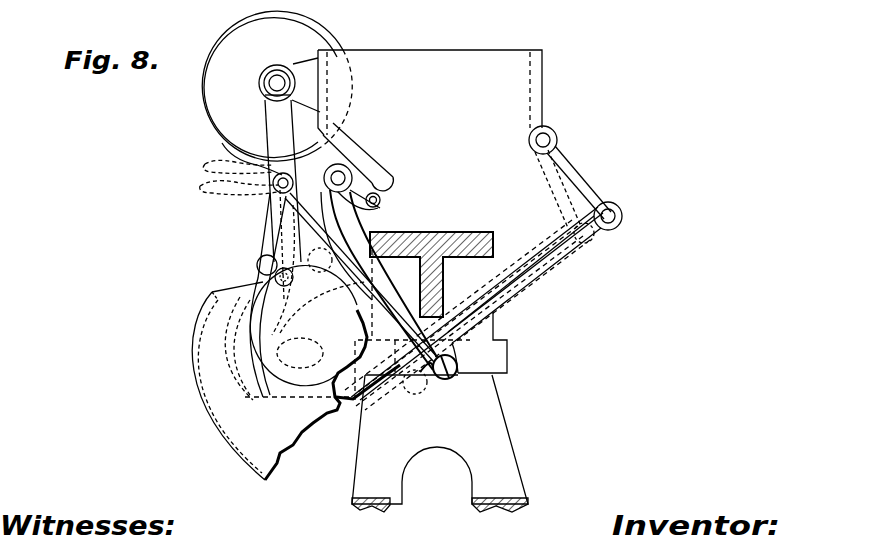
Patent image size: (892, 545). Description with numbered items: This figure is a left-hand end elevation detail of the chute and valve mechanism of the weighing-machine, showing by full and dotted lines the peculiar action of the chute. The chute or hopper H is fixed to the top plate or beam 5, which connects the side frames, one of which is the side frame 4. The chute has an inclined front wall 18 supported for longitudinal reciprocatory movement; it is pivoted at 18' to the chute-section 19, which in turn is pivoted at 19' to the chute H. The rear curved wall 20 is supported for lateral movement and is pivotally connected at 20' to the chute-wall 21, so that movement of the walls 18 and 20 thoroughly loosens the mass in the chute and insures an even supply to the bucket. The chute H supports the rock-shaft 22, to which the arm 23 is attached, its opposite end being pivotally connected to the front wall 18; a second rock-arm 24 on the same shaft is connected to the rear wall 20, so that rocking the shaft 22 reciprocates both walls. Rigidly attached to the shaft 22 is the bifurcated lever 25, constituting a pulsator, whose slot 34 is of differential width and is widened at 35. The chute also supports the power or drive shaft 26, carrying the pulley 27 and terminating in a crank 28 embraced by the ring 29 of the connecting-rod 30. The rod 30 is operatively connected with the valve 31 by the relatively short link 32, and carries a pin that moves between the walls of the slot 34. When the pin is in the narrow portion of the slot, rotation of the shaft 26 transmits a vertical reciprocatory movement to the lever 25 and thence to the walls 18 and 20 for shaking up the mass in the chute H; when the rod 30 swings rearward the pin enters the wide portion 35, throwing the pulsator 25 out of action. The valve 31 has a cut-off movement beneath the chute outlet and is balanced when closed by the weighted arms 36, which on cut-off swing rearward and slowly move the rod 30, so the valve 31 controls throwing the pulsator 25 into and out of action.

The chute H is at (430, 92).
The side frame 4 is at (440, 412).
The plate or beam 5 is at (460, 234).
The front wall 18 is at (474, 308).
The pivot 18' is at (626, 213).
The chute-section 19 is at (573, 194).
The pivot 19' is at (559, 134).
The rear curved wall 20 is at (235, 348).
The pivotal connection 20' is at (390, 185).
The chute-wall 21 is at (352, 171).
The rock-shaft 22 is at (340, 166).
The arm 23 is at (382, 284).
The second rock-arm 24 is at (300, 208).
The bifurcated lever 25 is at (328, 142).
The drive shaft 26 is at (262, 73).
The pulley 27 is at (277, 86).
The crank 28 is at (281, 77).
The ring 29 is at (262, 94).
The connecting-rod 30 is at (273, 122).
The valve 31 is at (296, 381).
The link 32 is at (307, 317).
The slot 34 is at (262, 187).
The widened portion 35 is at (214, 171).
The balance-weight 36 is at (357, 325).